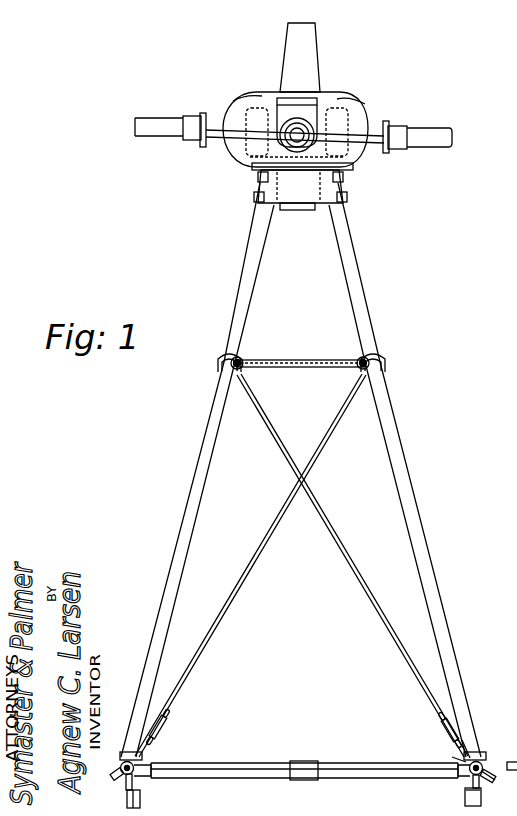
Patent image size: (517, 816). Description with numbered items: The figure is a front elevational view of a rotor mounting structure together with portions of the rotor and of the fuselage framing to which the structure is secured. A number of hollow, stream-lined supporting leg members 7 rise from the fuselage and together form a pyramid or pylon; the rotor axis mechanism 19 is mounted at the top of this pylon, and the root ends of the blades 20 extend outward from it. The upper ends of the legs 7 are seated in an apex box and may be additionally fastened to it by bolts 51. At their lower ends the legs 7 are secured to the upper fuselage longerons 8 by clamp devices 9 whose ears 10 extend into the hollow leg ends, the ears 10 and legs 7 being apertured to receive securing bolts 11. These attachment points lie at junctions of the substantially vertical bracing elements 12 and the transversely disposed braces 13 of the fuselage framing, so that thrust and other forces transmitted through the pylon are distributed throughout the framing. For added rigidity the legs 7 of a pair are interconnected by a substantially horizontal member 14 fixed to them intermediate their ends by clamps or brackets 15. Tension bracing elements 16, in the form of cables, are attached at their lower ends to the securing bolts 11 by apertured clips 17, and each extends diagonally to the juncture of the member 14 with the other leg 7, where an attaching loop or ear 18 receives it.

The supporting leg members 7 is at (203, 435).
The upper fuselage longerons 8 is at (121, 770).
The clamp devices 9 is at (484, 767).
The ears 10 is at (491, 792).
The securing bolts 11 is at (465, 763).
The vertically extending bracing elements 12 is at (141, 797).
The transversely disposed braces 13 is at (251, 765).
The horizontally disposed member 14 is at (283, 360).
The clamps or brackets 15 is at (225, 355).
The tension bracing elements 16 is at (327, 590).
The apertured clips 17 is at (472, 753).
The attaching loop or ear 18 is at (242, 360).
The rotor axis mechanism 19 is at (295, 116).
The root ends of the blades 20 is at (157, 132).
The bolts 51 is at (256, 196).